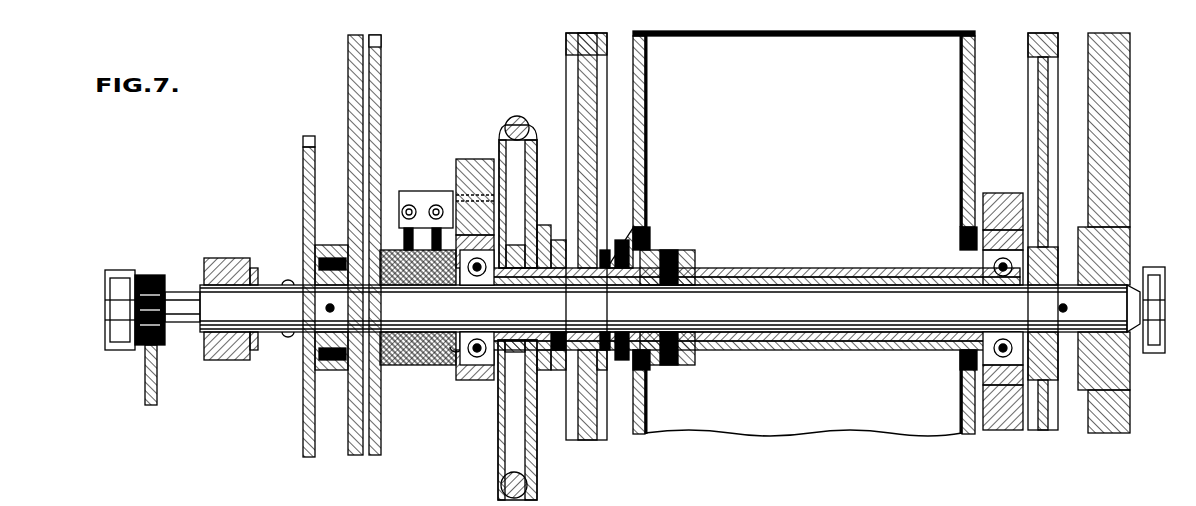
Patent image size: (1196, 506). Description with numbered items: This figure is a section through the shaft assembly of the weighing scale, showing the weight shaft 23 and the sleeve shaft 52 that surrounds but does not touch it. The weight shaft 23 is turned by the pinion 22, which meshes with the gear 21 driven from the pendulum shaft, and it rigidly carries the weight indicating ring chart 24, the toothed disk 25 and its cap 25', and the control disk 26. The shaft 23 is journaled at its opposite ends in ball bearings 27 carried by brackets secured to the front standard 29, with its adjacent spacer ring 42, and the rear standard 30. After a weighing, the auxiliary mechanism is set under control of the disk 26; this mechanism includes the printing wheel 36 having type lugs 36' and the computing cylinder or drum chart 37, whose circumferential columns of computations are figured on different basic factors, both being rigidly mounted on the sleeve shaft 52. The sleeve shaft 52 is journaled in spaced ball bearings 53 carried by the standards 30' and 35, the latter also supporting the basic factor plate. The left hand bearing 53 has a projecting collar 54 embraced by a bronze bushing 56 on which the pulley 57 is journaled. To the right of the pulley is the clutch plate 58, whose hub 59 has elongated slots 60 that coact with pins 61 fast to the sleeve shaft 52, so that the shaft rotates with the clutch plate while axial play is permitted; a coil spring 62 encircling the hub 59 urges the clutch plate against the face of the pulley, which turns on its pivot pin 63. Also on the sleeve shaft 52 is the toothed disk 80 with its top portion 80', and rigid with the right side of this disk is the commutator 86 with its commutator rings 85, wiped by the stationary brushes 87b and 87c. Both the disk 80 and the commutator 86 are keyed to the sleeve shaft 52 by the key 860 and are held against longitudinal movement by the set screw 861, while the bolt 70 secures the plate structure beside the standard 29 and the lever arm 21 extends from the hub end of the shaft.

The gear 21 is at (157, 398).
The pinion 22 is at (150, 278).
The shaft 23 is at (770, 300).
The weight indicating ring chart 24 is at (1036, 55).
The toothed disk 25 is at (302, 302).
The end plate cap 25' is at (285, 144).
The control disk 26 is at (356, 114).
The ball bearings 27 is at (110, 318).
The front standard 29 is at (225, 354).
The rear standard 30 is at (1124, 233).
The standard 30' is at (1003, 297).
The standard 35 is at (472, 160).
The printing wheel 36 is at (567, 236).
The type lugs 36' is at (598, 29).
The cylinder or drum chart 37 is at (722, 37).
The spacer ring 42 is at (256, 342).
The sleeve shaft 52 is at (725, 350).
The ball bearings 53 is at (990, 270).
The projecting collar 54 is at (534, 266).
The bronze bushing 56 is at (516, 265).
The pulley 57 is at (500, 146).
The clutch plate 58 is at (533, 146).
The hub 59 is at (602, 266).
The slots 60 is at (608, 268).
The pins 61 is at (576, 266).
The coil spring 62 is at (560, 350).
The pivot pin 63 is at (517, 116).
The bolt 70 is at (334, 258).
The toothed disk 80 is at (395, 245).
The plate top 80' is at (400, 44).
The commutator rings 85 is at (430, 366).
The commutator 86 is at (392, 250).
The stationary brush 87b is at (446, 228).
The stationary brush 87c is at (416, 206).
The key 860 is at (286, 280).
The set screw 861 is at (455, 352).